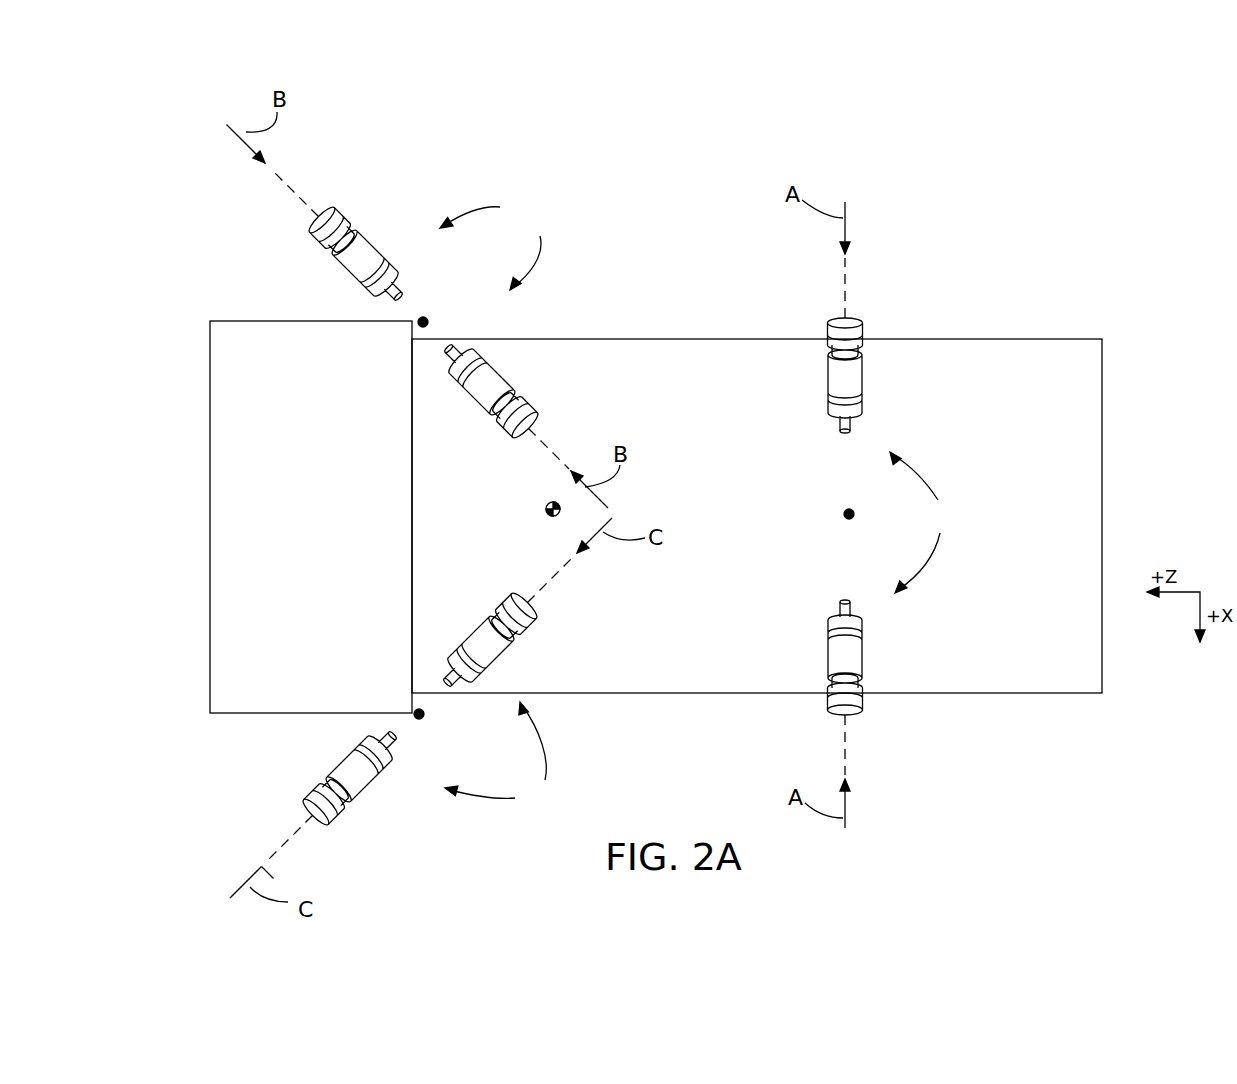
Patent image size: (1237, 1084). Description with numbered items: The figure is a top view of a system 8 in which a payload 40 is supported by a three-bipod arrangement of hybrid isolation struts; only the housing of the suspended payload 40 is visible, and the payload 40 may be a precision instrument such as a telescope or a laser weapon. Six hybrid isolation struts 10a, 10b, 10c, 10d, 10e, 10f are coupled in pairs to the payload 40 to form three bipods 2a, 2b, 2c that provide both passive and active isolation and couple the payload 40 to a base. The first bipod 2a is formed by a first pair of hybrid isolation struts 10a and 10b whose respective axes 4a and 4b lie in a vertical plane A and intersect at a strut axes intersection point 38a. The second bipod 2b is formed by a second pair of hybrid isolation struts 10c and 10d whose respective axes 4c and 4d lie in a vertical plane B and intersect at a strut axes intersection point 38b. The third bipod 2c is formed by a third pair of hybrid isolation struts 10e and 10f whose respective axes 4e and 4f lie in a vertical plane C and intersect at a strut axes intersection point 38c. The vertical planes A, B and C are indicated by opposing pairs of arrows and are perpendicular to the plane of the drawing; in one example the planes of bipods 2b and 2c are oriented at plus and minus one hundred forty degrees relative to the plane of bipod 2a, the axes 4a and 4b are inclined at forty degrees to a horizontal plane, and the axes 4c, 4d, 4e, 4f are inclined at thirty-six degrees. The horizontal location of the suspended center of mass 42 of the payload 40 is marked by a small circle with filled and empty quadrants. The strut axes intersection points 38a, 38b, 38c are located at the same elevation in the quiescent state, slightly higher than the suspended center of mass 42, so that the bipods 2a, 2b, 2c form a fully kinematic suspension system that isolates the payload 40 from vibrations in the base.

The system 8 is at (702, 160).
The payload 40 is at (662, 339).
The first bipod 2a is at (919, 522).
The second bipod 2b is at (490, 246).
The third bipod 2c is at (499, 757).
The axis 4a is at (846, 268).
The axis 4b is at (846, 758).
The axis 4c is at (295, 190).
The axis 4d is at (537, 433).
The axis 4e is at (292, 842).
The axis 4f is at (552, 580).
The hybrid isolation strut 10a is at (846, 322).
The hybrid isolation strut 10b is at (850, 712).
The hybrid isolation strut 10c is at (368, 242).
The hybrid isolation strut 10d is at (497, 388).
The hybrid isolation strut 10e is at (370, 792).
The hybrid isolation strut 10f is at (500, 655).
The strut axes intersection point 38a is at (845, 520).
The strut axes intersection point 38b is at (427, 320).
The strut axes intersection point 38c is at (424, 716).
The suspended center of mass 42 is at (546, 518).